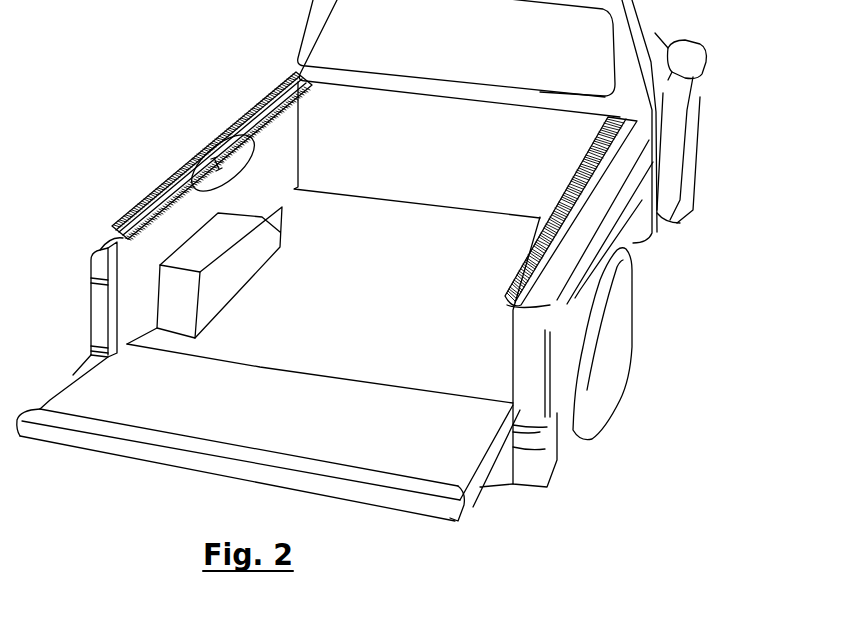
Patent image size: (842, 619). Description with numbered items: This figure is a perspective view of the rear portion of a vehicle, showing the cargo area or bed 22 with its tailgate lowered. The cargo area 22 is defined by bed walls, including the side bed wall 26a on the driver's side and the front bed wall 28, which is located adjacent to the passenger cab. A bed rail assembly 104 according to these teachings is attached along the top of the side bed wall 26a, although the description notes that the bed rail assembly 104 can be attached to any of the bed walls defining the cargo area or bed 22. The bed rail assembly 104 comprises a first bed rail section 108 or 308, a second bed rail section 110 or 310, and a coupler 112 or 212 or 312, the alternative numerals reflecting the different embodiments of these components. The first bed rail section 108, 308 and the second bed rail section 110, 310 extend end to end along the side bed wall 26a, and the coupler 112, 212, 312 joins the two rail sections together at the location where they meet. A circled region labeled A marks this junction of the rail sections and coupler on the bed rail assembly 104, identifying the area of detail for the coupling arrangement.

The cargo area or bed 22 is at (362, 260).
The side bed wall 26a is at (90, 297).
The front bed wall 28 is at (350, 120).
The bed rail assembly 104 is at (223, 161).
The first bed rail section 108 is at (163, 163).
The first bed rail section 308 is at (170, 191).
The second bed rail section 110 is at (206, 150).
The second bed rail section 310 is at (266, 113).
The coupler 112 is at (320, 204).
The coupler 212 is at (320, 204).
The coupler 312 is at (230, 171).
The detail region A is at (203, 157).